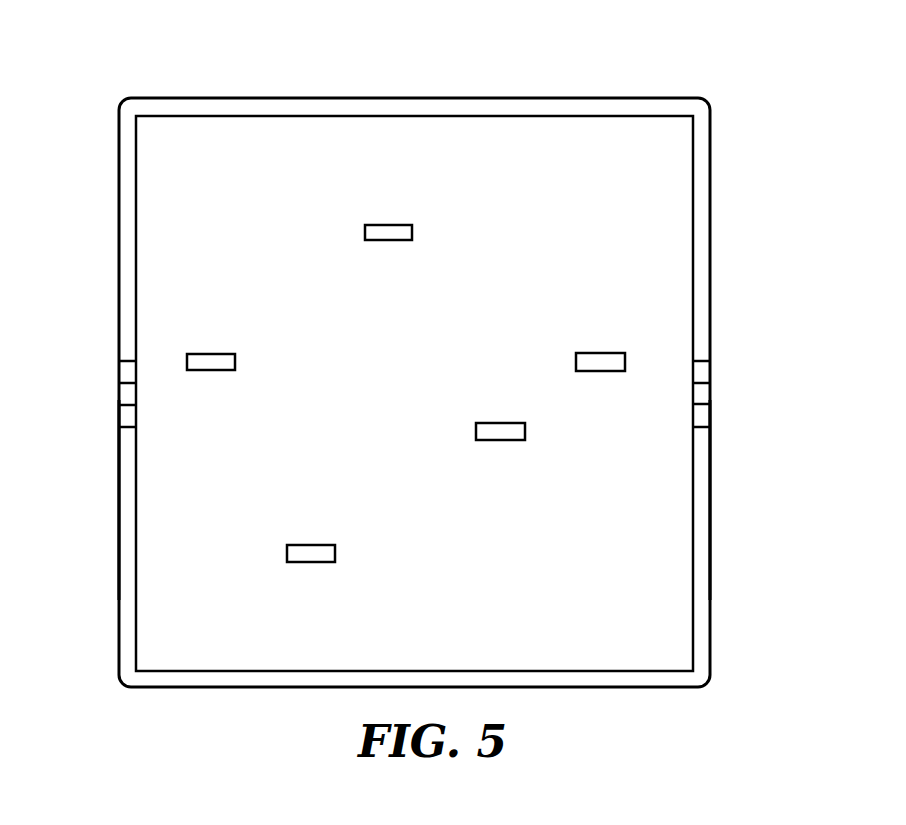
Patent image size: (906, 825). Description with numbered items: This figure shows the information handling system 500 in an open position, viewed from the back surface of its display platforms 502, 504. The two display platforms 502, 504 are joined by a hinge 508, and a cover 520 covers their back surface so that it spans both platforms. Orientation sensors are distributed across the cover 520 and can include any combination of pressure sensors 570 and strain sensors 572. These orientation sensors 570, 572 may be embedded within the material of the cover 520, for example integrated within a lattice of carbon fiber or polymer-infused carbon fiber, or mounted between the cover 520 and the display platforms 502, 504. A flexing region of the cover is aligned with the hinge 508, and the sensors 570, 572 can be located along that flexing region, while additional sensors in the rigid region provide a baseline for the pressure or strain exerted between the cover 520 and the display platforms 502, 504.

The information handling system 500 is at (659, 78).
The display platform 502 is at (718, 229).
The display platform 504 is at (718, 565).
The hinge 508 is at (128, 393).
The cover 520 is at (205, 151).
The pressure sensors 570 is at (200, 363).
The strain sensors 572 is at (390, 232).